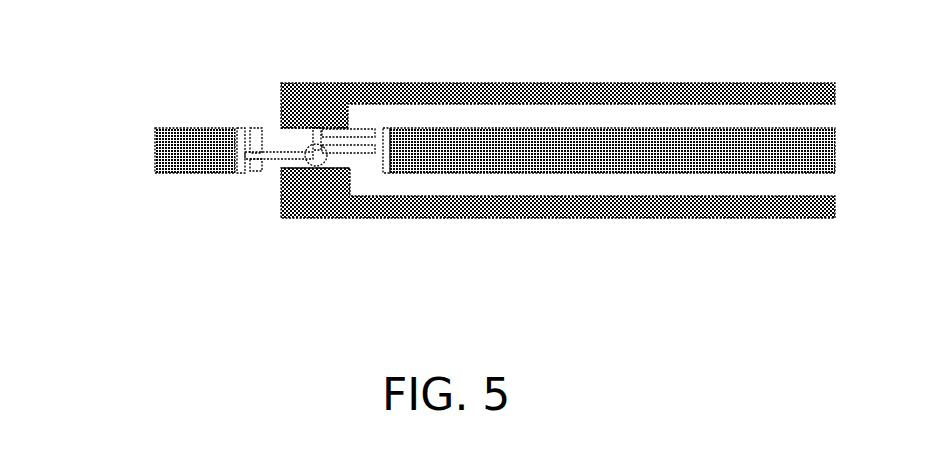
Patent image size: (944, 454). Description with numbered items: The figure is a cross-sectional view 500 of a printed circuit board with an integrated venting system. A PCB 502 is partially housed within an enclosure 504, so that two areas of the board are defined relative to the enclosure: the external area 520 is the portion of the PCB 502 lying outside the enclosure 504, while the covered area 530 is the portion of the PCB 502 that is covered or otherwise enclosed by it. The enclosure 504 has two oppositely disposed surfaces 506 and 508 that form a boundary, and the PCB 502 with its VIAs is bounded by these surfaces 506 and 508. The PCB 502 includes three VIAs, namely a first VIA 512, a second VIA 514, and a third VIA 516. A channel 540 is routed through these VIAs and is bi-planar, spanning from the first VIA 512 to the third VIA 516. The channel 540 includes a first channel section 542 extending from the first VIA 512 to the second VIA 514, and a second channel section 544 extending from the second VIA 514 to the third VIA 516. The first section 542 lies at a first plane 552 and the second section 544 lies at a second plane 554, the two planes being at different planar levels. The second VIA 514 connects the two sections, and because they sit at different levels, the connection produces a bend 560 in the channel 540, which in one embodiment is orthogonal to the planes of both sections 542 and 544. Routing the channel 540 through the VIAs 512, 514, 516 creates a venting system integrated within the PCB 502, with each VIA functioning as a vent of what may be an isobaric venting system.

The cross-sectional view 500 is at (107, 265).
The PCB 502 is at (825, 152).
The enclosure 504 is at (627, 86).
The surface 506 is at (287, 133).
The surface 508 is at (302, 168).
The first VIA 512 is at (243, 128).
The second VIA 514 is at (316, 167).
The third VIA 516 is at (379, 155).
The external area 520 is at (163, 128).
The covered area 530 is at (610, 172).
The channel 540 is at (258, 173).
The first channel section 542 is at (262, 128).
The second channel section 544 is at (362, 147).
The first plane 552 is at (270, 161).
The second plane 554 is at (328, 140).
The bend 560 is at (311, 166).